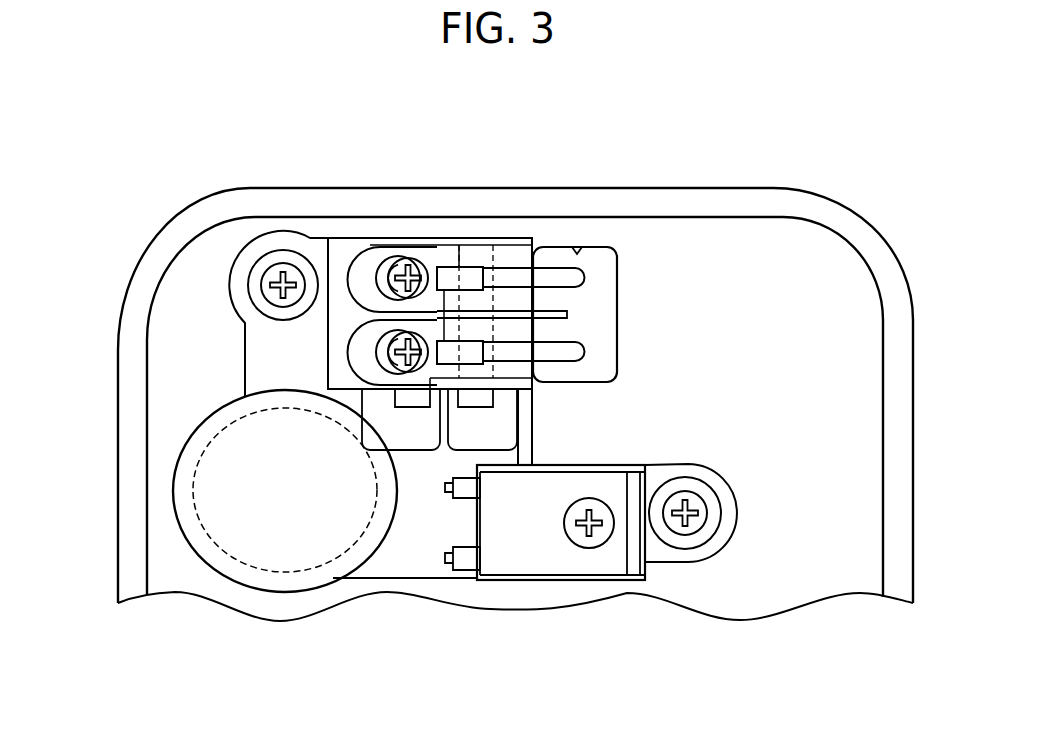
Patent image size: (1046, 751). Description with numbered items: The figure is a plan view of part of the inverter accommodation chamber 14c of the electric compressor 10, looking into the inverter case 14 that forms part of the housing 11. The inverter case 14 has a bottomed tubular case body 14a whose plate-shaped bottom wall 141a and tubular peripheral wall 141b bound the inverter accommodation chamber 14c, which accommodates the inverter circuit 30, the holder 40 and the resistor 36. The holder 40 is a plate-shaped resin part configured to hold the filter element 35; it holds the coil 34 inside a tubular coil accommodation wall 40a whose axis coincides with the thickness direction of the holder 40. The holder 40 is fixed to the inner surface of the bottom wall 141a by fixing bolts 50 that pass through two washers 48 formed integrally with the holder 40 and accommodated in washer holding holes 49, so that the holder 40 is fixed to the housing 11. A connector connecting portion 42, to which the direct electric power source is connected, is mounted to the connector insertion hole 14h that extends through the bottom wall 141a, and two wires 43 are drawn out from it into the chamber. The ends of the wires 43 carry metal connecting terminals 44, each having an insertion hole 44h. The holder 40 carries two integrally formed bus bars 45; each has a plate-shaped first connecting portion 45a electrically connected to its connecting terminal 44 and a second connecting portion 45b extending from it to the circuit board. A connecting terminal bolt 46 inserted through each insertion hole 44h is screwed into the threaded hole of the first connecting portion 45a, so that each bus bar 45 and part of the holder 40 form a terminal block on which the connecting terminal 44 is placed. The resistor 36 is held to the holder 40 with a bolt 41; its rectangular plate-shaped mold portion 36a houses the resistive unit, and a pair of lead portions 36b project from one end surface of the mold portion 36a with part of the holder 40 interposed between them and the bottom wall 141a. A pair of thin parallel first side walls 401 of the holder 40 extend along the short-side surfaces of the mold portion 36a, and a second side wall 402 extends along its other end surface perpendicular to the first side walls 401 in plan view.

The electric compressor 10 is at (172, 170).
The housing 11 is at (892, 194).
The inverter case 14 is at (888, 248).
The case body 14a is at (146, 250).
The inverter accommodation chamber 14c is at (822, 307).
The connector insertion hole 14h is at (577, 253).
The bottom wall 141a is at (818, 598).
The peripheral wall 141b is at (126, 400).
The inverter circuit 30 is at (670, 258).
The coil 34 is at (234, 558).
The filter element 35 is at (285, 490).
The resistor 36 is at (553, 483).
The mold portion 36a is at (570, 567).
The lead portions 36b is at (443, 487).
The holder 40 is at (233, 262).
The coil accommodation wall 40a is at (207, 420).
The first side walls 401 is at (590, 466).
The second side wall 402 is at (634, 540).
The bolt 41 is at (605, 534).
The connector connecting portion 42 is at (612, 313).
The wires 43 is at (515, 272).
The connecting terminals 44 is at (381, 262).
The insertion hole 44h is at (398, 262).
The bus bars 45 is at (355, 250).
The first connecting portion 45a is at (447, 248).
The second connecting portion 45b is at (477, 407).
The connecting terminal bolt 46 is at (407, 258).
The washers 48 is at (247, 285).
The washer holding holes 49 is at (262, 252).
The fixing bolts 50 is at (258, 302).